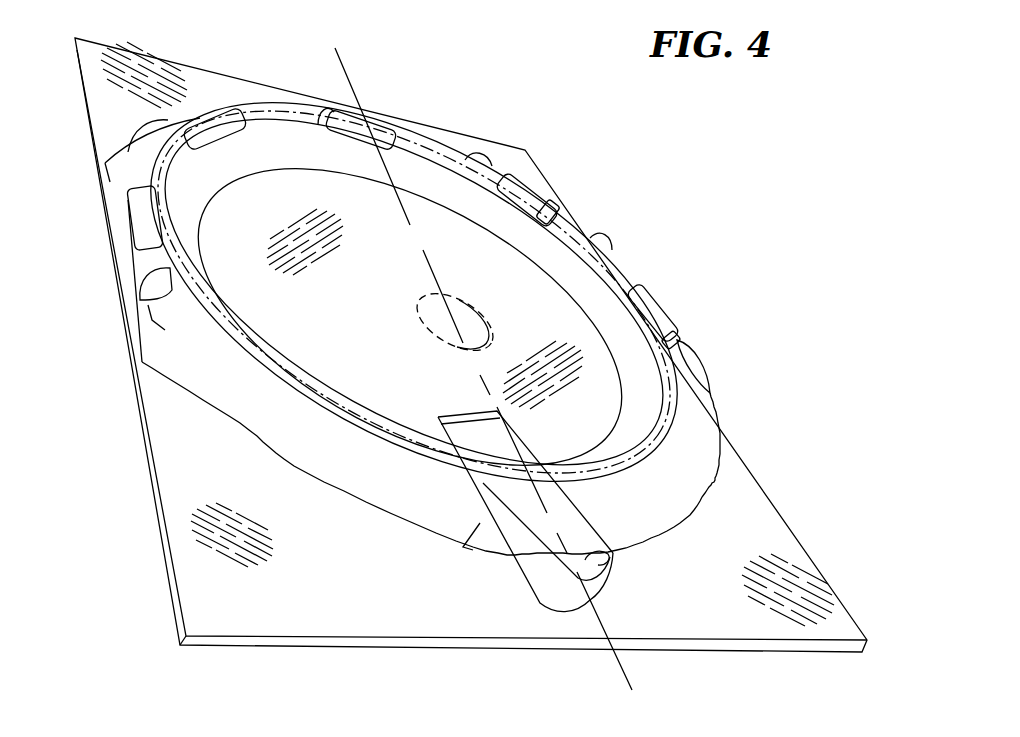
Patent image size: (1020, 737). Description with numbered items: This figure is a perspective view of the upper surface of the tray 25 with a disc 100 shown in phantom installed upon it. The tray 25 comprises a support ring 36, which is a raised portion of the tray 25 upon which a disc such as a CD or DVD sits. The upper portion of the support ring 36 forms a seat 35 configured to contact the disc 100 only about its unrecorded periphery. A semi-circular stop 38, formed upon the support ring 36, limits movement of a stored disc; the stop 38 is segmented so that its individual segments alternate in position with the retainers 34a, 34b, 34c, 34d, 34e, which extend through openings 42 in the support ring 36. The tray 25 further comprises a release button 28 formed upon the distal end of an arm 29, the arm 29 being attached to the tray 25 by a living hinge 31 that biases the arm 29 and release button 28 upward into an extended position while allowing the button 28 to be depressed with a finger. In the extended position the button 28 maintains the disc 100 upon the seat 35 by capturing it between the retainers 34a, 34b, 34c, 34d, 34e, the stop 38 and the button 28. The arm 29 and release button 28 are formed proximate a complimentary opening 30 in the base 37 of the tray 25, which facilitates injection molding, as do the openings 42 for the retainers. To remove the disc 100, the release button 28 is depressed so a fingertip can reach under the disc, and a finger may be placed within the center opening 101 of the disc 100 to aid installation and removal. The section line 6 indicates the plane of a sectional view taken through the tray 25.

The section line 6- 6 is at (335, 48).
The tray 25 is at (103, 324).
The release button 28 is at (608, 554).
The arm 29 is at (520, 450).
The complimentary opening 30 is at (553, 606).
The living hinge 31 is at (478, 418).
The retainer 34a is at (665, 313).
The retainer 34b is at (512, 207).
The retainer 34c is at (387, 180).
The retainer 34d is at (204, 133).
The retainer 34e is at (146, 224).
The seat 35 is at (415, 168).
The support ring 36 is at (310, 160).
The base 37 is at (205, 590).
The semi-circular stop 38 is at (256, 102).
The openings 42 is at (540, 210).
The disc 100 is at (275, 362).
The center opening 101 is at (470, 320).